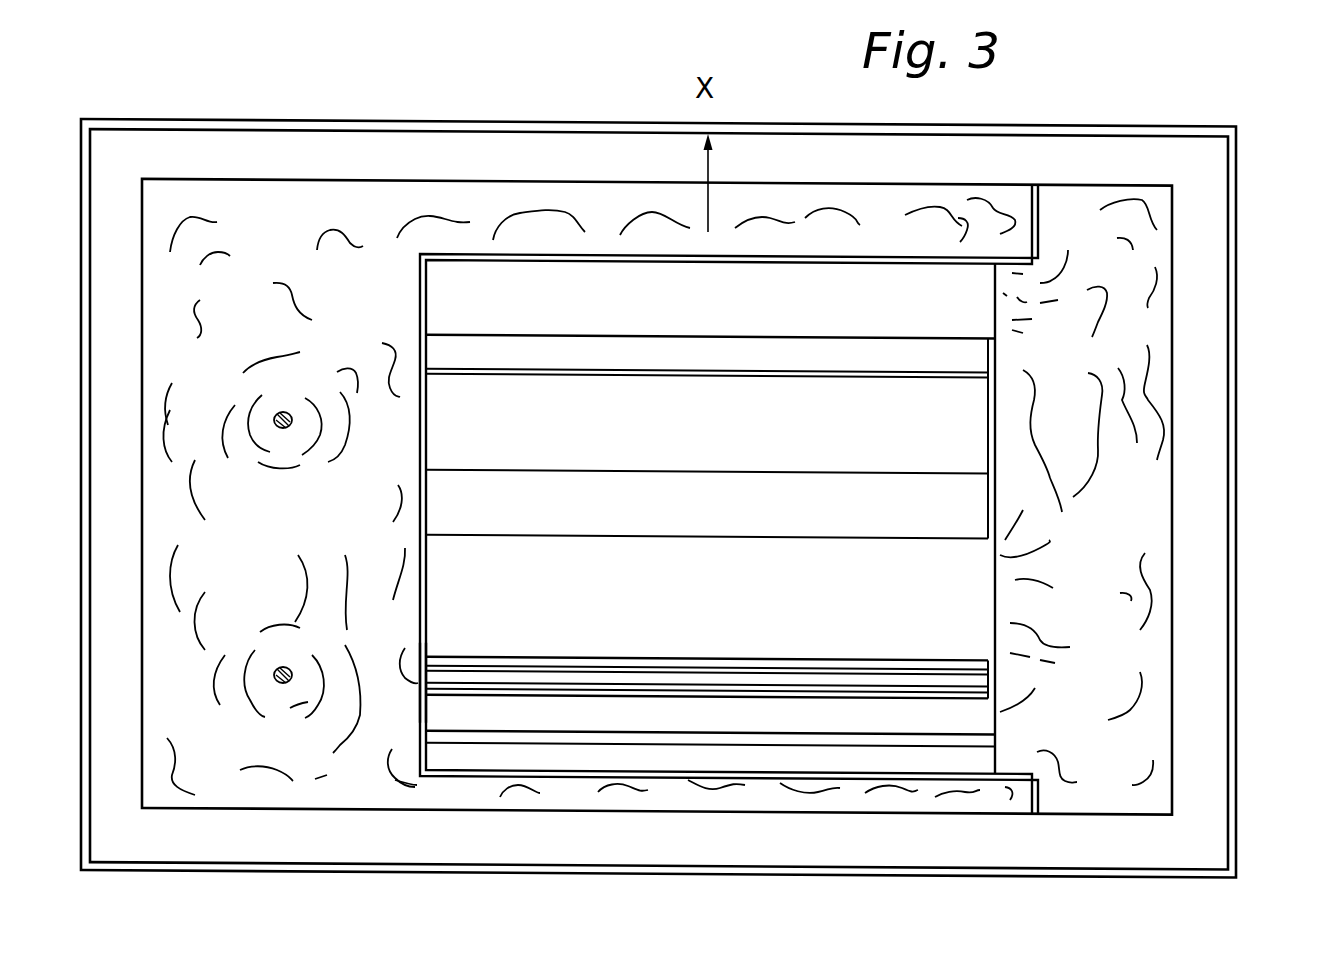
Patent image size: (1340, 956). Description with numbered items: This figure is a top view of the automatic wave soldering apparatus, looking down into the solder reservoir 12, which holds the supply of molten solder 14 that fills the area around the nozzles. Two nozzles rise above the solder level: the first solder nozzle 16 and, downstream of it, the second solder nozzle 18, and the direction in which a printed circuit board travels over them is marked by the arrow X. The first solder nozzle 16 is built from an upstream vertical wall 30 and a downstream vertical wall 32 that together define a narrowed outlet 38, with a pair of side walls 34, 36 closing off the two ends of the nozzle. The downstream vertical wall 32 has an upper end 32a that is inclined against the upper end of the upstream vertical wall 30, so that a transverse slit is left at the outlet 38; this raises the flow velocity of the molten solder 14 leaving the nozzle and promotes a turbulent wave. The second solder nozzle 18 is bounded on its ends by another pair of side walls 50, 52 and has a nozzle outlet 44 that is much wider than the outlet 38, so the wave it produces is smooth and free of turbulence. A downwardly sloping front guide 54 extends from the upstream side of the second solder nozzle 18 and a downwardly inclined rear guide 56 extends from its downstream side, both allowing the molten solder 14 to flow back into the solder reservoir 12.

The solder reservoir 12 is at (1176, 540).
The molten solder 14 is at (1113, 565).
The first solder nozzle 16 is at (785, 678).
The second solder nozzle 18 is at (592, 393).
The upstream vertical wall 30 is at (547, 700).
The downstream vertical wall 32 is at (572, 668).
The upper end 32a is at (677, 678).
The side wall 34 is at (420, 675).
The side wall 36 is at (997, 677).
The narrowed outlet 38 is at (688, 687).
The nozzle outlet 44 is at (742, 402).
The side wall 50 is at (420, 444).
The side wall 52 is at (997, 453).
The front guide 54 is at (901, 520).
The rear guide 56 is at (883, 350).